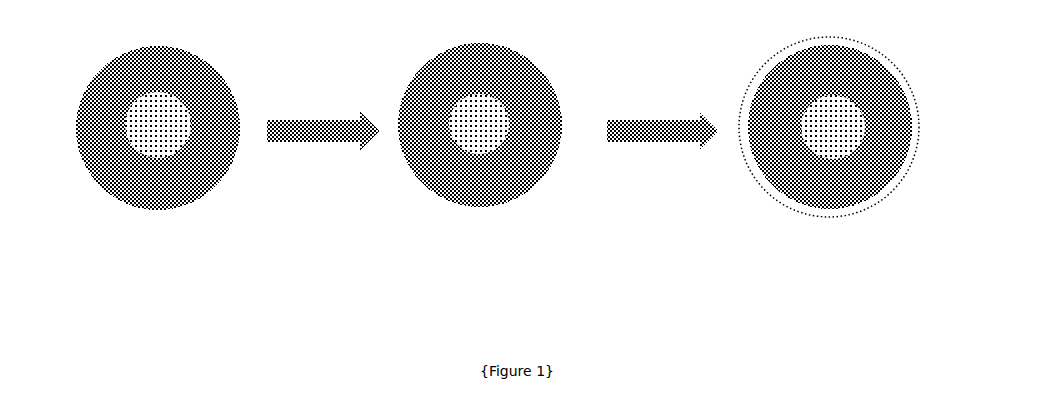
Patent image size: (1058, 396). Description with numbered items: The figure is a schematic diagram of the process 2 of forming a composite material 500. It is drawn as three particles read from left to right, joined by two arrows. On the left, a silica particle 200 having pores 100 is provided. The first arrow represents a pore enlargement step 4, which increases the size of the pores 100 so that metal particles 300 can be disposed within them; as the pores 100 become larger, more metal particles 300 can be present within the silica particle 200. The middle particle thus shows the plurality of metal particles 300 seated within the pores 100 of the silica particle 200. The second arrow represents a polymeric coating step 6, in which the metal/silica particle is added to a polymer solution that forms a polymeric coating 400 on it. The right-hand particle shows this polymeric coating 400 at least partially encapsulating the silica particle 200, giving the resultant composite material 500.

The process 2 is at (116, 247).
The pore enlargement step 4 is at (323, 122).
The polymeric coating step 6 is at (662, 122).
The pores 100 is at (175, 116).
The porous silica particle 200 is at (172, 155).
The metal particles 300 is at (529, 62).
The polymeric coating 400 is at (849, 156).
The composite material 500 is at (874, 180).